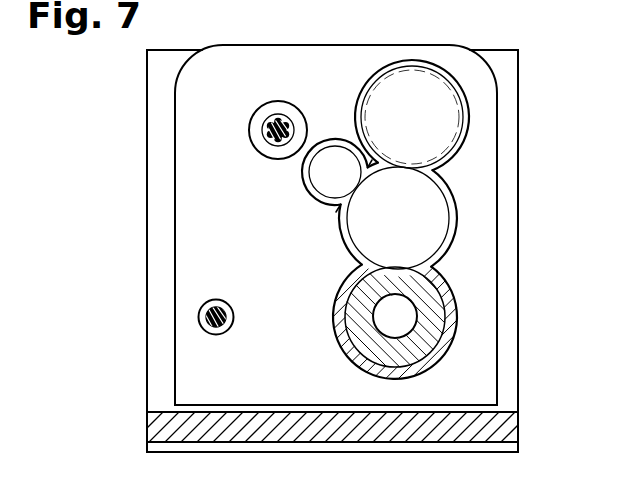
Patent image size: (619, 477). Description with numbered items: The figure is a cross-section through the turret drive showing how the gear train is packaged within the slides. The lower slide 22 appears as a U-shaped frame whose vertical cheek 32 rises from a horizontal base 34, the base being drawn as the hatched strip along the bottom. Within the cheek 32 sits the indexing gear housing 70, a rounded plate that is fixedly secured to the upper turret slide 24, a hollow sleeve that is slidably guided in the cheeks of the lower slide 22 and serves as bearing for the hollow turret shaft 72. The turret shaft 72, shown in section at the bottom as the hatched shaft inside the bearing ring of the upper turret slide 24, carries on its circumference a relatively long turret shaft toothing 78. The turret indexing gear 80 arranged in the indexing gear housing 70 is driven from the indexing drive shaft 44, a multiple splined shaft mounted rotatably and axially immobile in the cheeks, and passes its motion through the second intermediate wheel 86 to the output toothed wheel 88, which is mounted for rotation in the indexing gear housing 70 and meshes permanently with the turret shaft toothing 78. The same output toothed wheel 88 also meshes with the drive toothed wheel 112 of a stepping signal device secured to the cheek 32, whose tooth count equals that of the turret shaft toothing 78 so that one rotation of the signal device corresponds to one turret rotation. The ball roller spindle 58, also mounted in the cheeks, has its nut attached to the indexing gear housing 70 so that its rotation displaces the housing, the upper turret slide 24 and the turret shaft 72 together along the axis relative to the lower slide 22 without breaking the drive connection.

The lower slide 22 is at (530, 170).
The upper turret slide 24 is at (448, 297).
The cheek 32 is at (152, 100).
The base 34 is at (160, 429).
The indexing drive shaft 44 is at (262, 125).
The ball roller spindle 58 is at (228, 315).
The indexing gear housing 70 is at (183, 213).
The turret shaft 72 is at (425, 332).
The turret shaft toothing 78 is at (445, 322).
The turret indexing gear 80 is at (333, 220).
The second intermediate wheel 86 is at (322, 173).
The output toothed wheel 88 is at (433, 202).
The drive toothed wheel 112 is at (448, 117).